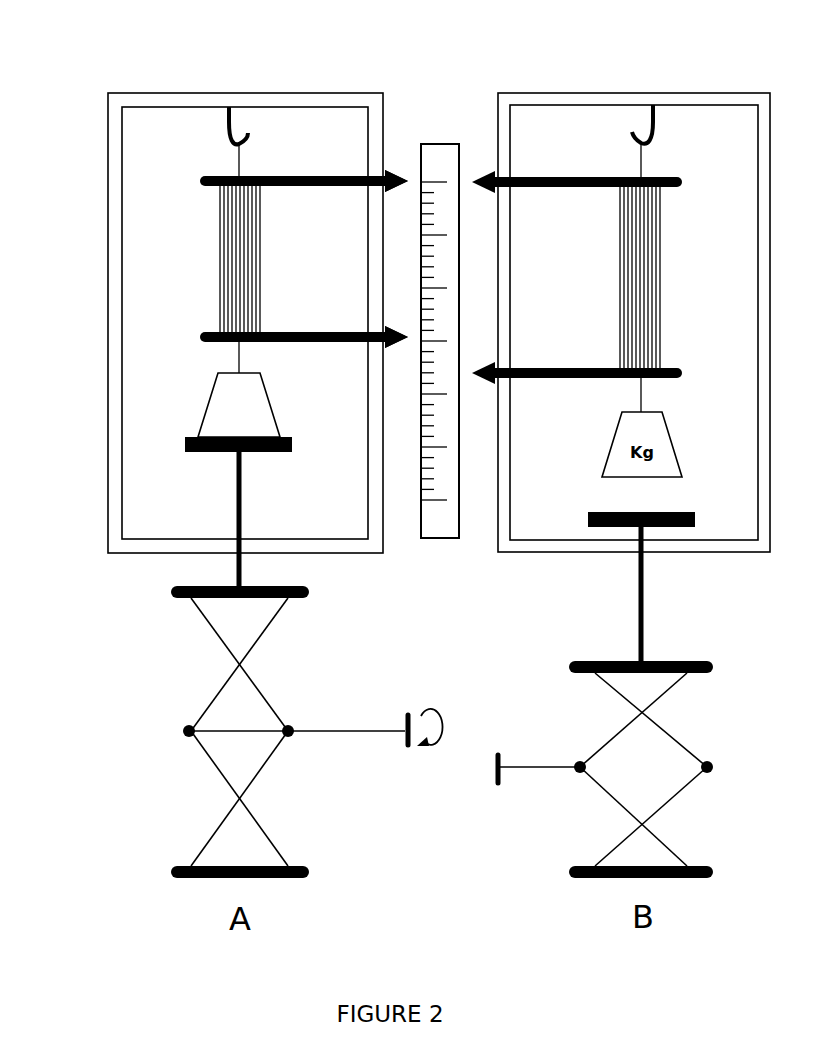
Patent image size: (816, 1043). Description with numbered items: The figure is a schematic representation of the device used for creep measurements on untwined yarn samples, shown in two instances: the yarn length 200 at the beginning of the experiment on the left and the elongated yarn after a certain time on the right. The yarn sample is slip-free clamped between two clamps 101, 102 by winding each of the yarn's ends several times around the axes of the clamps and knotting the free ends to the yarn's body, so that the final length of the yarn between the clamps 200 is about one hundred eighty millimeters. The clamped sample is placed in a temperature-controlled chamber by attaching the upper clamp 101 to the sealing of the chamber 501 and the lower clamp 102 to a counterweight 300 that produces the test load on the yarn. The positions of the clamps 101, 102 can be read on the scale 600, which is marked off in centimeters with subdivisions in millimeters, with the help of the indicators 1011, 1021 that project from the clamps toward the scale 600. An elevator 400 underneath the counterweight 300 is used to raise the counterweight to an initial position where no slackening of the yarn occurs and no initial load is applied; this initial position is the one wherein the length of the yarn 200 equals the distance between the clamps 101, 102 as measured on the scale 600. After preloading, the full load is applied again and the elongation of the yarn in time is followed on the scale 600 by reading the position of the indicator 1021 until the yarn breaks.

The sealing of the chamber 501 is at (150, 101).
The clamp 101 is at (196, 181).
The indicator 1011 is at (393, 167).
The yarn length 200 is at (209, 258).
The clamp 102 is at (196, 337).
The indicator 1021 is at (393, 333).
The counterweight 300 is at (196, 410).
The elevator 400 is at (171, 731).
The scale 600 is at (433, 132).